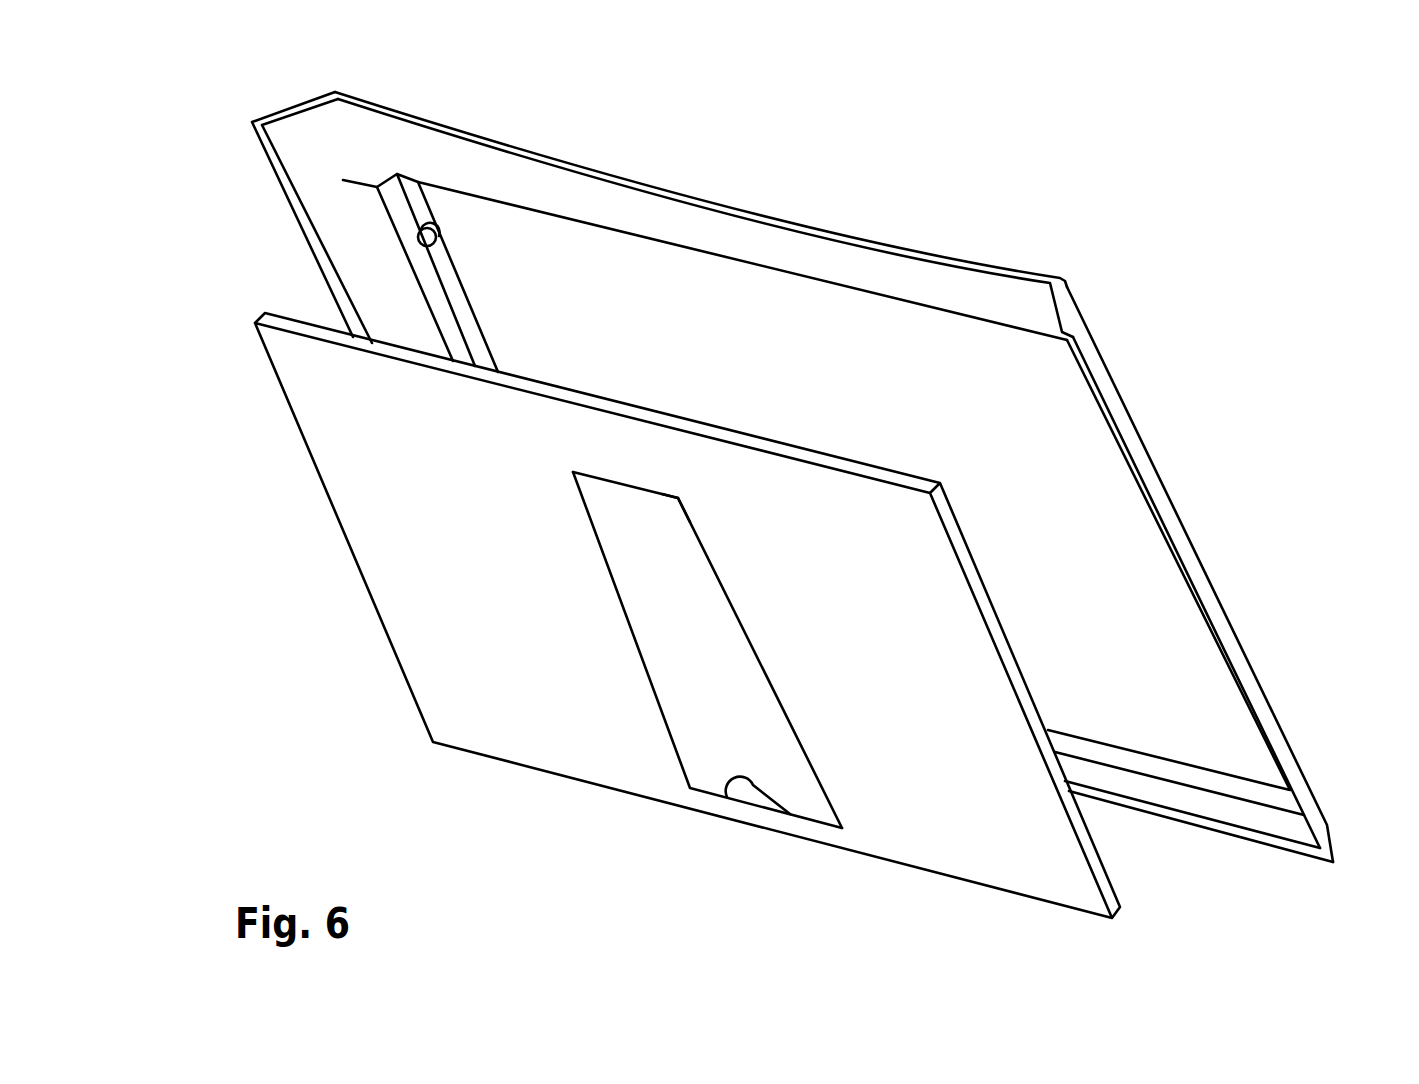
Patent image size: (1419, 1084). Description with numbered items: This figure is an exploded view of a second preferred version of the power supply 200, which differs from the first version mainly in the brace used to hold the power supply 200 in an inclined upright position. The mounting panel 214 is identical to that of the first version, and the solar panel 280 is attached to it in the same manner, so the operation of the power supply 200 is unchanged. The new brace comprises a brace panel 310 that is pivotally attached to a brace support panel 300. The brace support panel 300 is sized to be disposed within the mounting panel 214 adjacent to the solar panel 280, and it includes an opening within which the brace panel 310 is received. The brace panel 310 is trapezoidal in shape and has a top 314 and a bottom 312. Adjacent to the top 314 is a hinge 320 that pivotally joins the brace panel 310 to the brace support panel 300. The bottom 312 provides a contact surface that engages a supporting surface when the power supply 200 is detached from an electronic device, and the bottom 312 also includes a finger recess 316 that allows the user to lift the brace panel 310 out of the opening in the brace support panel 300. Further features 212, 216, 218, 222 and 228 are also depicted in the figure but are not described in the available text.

The power supply 200 is at (787, 497).
The bottom rail 212 is at (1150, 815).
The mounting panel 214 is at (988, 262).
The right side rail 216 is at (1195, 568).
The left side rail 218 is at (323, 213).
The back panel 222 is at (617, 203).
The pin 228 is at (433, 222).
The solar panel 280 is at (893, 409).
The brace support panel 300 is at (425, 573).
The brace panel 310 is at (703, 702).
The bottom 312 is at (808, 820).
The top 314 is at (615, 482).
The finger recess 316 is at (747, 785).
The hinge 320 is at (678, 498).